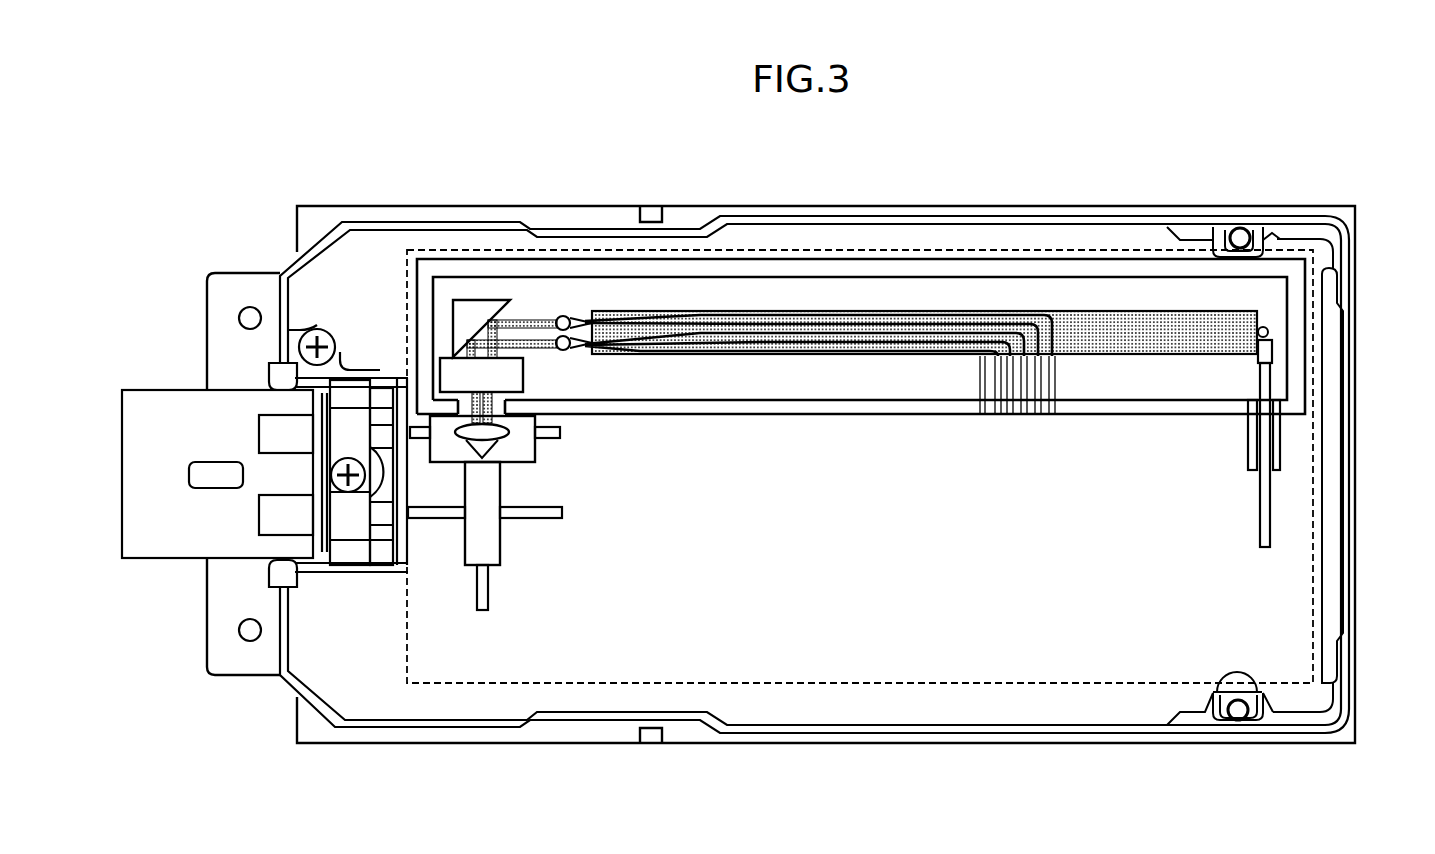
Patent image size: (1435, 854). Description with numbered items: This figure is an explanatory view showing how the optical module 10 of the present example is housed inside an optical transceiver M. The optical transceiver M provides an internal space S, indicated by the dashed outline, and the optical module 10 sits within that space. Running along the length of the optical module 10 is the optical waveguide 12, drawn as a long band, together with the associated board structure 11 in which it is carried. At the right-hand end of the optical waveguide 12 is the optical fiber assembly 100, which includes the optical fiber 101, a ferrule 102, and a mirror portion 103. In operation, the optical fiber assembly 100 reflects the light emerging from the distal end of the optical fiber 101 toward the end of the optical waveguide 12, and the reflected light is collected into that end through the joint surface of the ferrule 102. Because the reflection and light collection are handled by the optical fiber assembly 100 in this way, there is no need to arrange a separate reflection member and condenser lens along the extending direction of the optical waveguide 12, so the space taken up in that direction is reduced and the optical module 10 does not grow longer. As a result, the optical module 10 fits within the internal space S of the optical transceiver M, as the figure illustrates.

The optical transceiver M is at (1357, 291).
The internal space S is at (1110, 249).
The optical module 10 is at (872, 442).
The flexible printed board 11 is at (1240, 312).
The optical waveguide 12 is at (1200, 330).
The optical fiber assembly 100 is at (1337, 434).
The optical fiber 101 is at (1272, 490).
The ferrule 102 is at (1272, 352).
The mirror portion 103 is at (1268, 332).